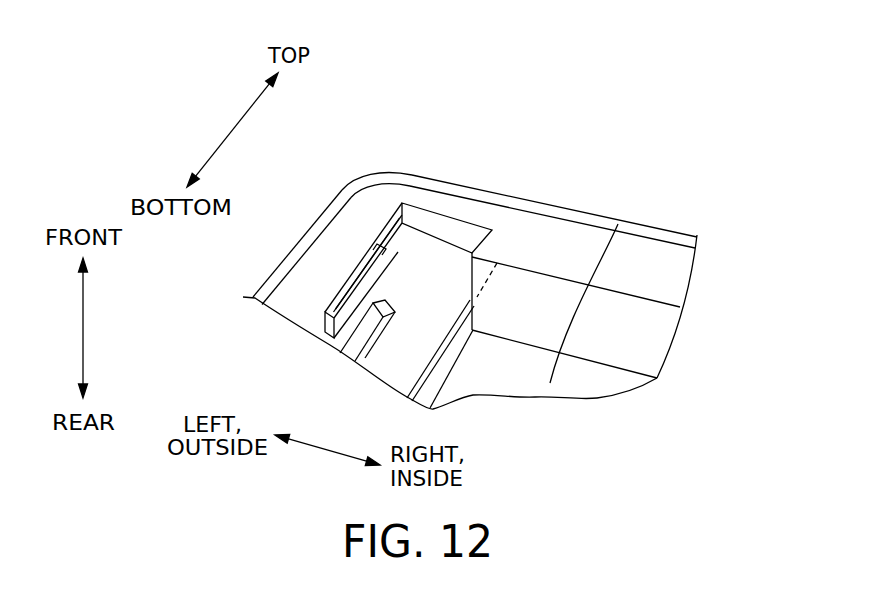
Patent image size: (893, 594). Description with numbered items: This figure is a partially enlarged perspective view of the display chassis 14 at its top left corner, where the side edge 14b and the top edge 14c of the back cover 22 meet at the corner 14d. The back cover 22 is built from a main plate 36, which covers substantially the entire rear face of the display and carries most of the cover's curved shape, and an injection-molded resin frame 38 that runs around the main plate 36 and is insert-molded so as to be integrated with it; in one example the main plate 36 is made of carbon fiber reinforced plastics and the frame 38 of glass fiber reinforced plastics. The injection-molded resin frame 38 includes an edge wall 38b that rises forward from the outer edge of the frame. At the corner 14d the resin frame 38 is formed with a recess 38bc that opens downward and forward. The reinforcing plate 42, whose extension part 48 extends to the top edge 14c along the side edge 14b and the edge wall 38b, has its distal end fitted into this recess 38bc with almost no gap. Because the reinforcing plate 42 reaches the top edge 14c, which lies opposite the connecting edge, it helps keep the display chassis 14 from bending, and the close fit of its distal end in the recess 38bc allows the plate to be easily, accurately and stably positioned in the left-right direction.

The display chassis 14 is at (708, 118).
The side edge 14b is at (311, 228).
The top edge 14c is at (667, 232).
The corner 14d is at (372, 173).
The back cover 22 is at (662, 133).
The main plate 36 is at (618, 224).
The injection-molded resin frame 38 is at (545, 240).
The edge wall 38b is at (315, 277).
The recess 38bc is at (450, 233).
The reinforcing plate 42 is at (405, 347).
The extension part 48 is at (358, 224).